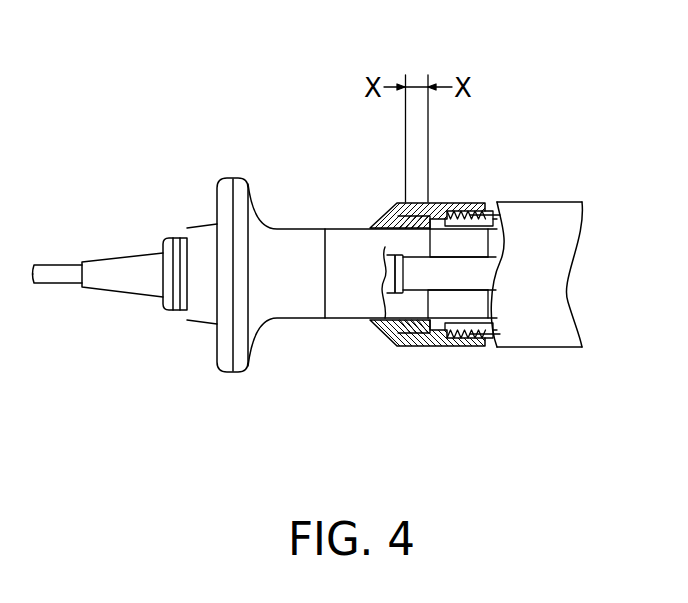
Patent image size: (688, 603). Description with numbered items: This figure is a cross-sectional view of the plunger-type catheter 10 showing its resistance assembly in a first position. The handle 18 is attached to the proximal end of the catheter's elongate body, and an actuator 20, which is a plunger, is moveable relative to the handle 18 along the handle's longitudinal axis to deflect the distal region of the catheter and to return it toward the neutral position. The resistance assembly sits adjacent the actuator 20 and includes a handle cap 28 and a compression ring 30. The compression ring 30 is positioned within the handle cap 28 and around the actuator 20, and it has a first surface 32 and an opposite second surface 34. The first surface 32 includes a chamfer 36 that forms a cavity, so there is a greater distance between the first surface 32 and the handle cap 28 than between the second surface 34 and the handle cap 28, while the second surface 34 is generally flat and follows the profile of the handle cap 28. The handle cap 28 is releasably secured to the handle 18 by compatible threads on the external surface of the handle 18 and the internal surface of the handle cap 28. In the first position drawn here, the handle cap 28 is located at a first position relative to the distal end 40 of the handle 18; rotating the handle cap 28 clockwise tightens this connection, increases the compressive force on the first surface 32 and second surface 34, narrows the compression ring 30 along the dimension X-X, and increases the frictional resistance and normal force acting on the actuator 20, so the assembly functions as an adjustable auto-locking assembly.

The catheter 10 is at (548, 79).
The handle 18 is at (492, 217).
The actuator 20 is at (227, 182).
The handle cap 28 is at (472, 202).
The compression ring 30 is at (410, 347).
The first surface 32 is at (395, 207).
The second surface 34 is at (442, 346).
The chamfer 36 is at (402, 337).
The distal end of handle 40 is at (383, 247).